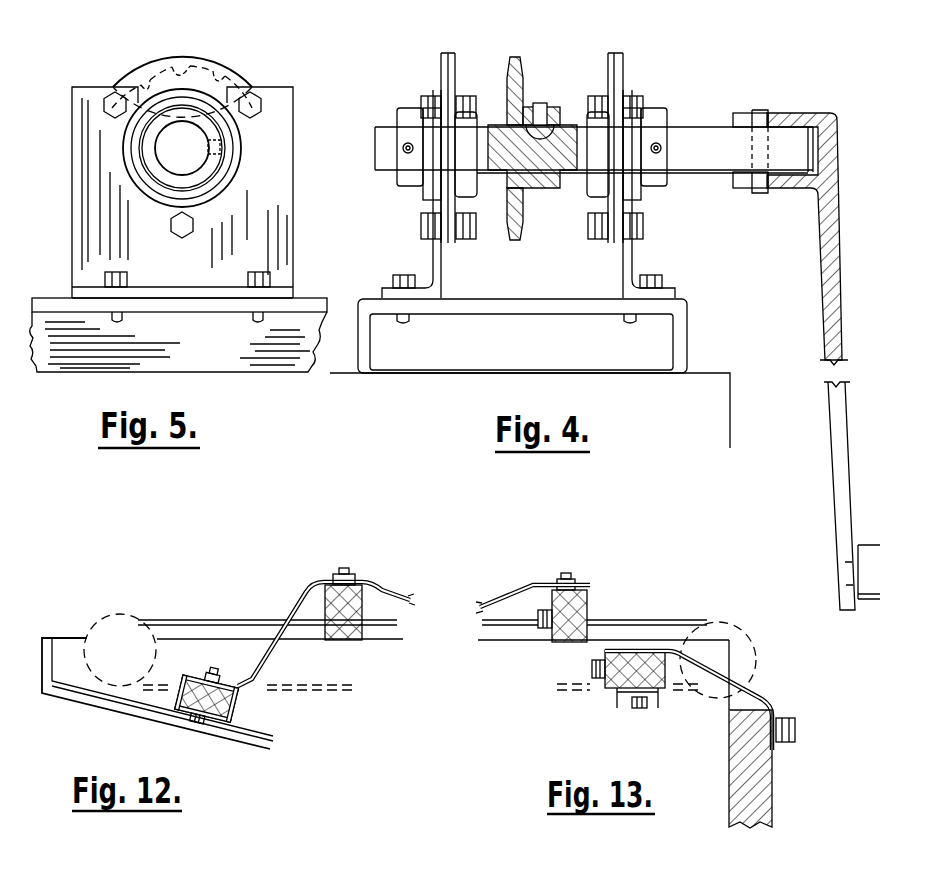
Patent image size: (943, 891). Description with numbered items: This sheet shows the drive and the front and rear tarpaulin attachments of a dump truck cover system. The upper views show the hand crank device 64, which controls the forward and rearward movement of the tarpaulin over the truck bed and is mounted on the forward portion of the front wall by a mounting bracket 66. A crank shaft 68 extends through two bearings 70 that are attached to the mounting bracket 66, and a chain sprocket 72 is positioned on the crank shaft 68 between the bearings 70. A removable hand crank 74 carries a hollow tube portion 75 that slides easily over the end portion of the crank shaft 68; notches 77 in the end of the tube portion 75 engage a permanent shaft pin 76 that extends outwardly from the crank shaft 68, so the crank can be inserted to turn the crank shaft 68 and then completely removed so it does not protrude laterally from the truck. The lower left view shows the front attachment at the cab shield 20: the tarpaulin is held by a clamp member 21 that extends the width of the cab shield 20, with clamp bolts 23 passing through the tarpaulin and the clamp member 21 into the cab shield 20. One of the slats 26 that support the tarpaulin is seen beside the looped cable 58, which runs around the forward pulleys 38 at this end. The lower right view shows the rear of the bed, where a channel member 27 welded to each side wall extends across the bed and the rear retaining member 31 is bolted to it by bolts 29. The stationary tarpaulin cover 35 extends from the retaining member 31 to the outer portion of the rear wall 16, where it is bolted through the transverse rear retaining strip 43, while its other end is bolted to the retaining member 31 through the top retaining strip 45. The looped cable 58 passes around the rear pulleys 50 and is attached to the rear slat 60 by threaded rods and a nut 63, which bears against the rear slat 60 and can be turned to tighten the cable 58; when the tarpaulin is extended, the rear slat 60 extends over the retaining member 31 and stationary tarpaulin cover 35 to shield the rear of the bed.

In FIG. 13, the rear wall 16 is at (730, 755).
In FIG. 12, the cab shield 20 is at (42, 653).
In FIG. 12, the clamp member 21 is at (190, 706).
In FIG. 12, the clamp bolts 23 is at (217, 675).
In FIG. 12, the slats 26 is at (370, 590).
In FIG. 13, the channel member 27 is at (618, 710).
In FIG. 13, the bolts 29 is at (641, 710).
In FIG. 13, the rear retaining member 31 is at (673, 686).
In FIG. 13, the stationary tarpaulin cover 35 is at (766, 700).
In FIG. 12, the forward pulleys 38 is at (120, 616).
In FIG. 13, the transverse rear retaining strip 43 is at (787, 720).
In FIG. 13, the top retaining strip 45 is at (604, 684).
In FIG. 13, the rear pulleys 50 is at (740, 637).
In FIG. 12, the looped cable 58 is at (236, 620).
In FIG. 13, the rear slat 60 is at (590, 596).
In FIG. 13, the nut 63 is at (545, 630).
In FIG. 4, the hand crank device 64 is at (540, 22).
In FIG. 5, the mounting bracket 66 is at (294, 266).
In FIG. 4, the mounting bracket 66 is at (431, 262).
In FIG. 4, the crank shaft 68 is at (696, 126).
In FIG. 5, the bearings 70 is at (177, 52).
In FIG. 4, the bearings 70 is at (448, 53).
In FIG. 5, the chain sprocket 72 is at (207, 68).
In FIG. 4, the chain sprocket 72 is at (524, 85).
In FIG. 4, the removable hand crank 74 is at (833, 478).
In FIG. 4, the hollow tube portion 75 is at (809, 113).
In FIG. 4, the shaft pin 76 is at (757, 190).
In FIG. 4, the notches 77 is at (741, 111).